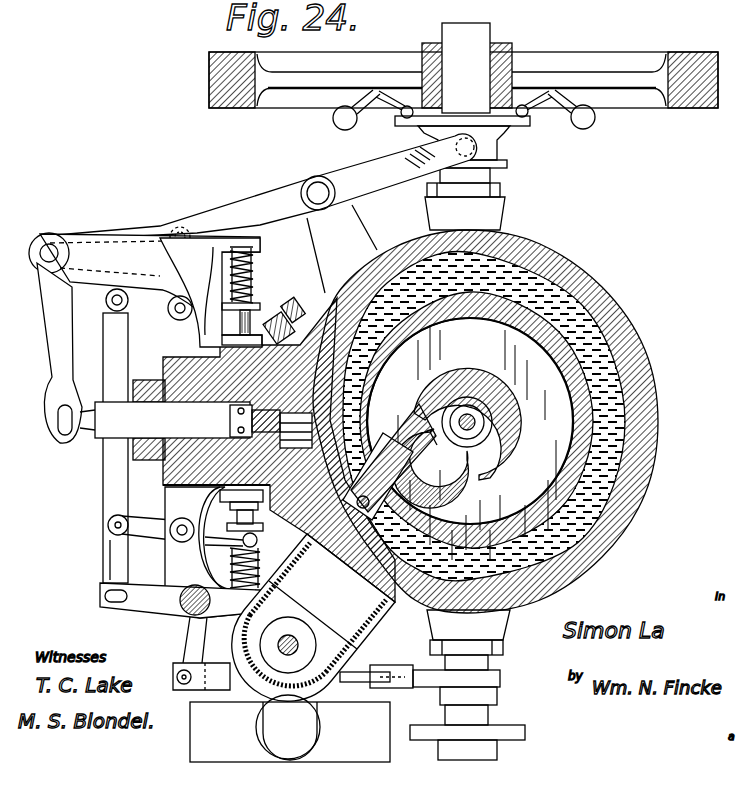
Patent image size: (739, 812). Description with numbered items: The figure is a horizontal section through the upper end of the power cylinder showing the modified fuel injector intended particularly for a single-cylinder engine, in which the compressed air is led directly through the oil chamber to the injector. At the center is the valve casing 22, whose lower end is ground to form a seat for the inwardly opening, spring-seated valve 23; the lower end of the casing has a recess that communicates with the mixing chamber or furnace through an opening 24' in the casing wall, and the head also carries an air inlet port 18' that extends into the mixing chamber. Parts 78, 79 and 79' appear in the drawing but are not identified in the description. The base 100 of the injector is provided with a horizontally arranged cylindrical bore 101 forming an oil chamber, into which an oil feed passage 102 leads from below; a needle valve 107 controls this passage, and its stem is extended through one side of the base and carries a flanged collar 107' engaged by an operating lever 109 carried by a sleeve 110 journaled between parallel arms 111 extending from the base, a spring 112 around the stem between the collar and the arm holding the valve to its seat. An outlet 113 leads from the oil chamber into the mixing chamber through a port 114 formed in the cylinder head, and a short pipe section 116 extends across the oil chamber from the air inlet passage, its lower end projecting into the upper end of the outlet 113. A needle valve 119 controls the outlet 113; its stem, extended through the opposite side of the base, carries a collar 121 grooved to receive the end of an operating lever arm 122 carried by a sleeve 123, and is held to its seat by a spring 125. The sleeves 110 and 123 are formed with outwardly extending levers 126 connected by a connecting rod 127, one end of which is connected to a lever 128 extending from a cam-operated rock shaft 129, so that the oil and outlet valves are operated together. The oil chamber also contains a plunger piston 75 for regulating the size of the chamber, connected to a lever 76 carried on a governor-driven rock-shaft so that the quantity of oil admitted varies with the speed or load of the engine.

The scroll casing outer wall 78 is at (588, 272).
The casing inner wall 79 is at (513, 415).
The valve casing 22 is at (498, 399).
The spring seated valve 23 is at (478, 427).
The opening 24' is at (419, 459).
The air inlet port 18' is at (389, 462).
The port 114 is at (348, 413).
The yoke 79' is at (313, 617).
The lever 76 is at (288, 727).
The plunger piston 75 is at (290, 732).
The levers 126 is at (147, 527).
The parallel arms 111 is at (150, 268).
The springs 112 is at (253, 266).
The operating levers 109 is at (239, 318).
The flanged collars 107' is at (276, 309).
The needle valve 107 is at (299, 308).
The sleeve 110 is at (116, 341).
The base 100 is at (172, 368).
The oil feed passage 102 is at (211, 296).
The short pipe section 116 is at (172, 420).
The outlet 113 is at (200, 418).
The cylindrical bore 101 is at (231, 420).
The needle valve 119 is at (216, 510).
The connecting rod 127 is at (110, 556).
The sleeve 123 is at (177, 542).
The operating lever arms 122 is at (212, 547).
The springs 125 is at (232, 570).
The collars 121 is at (245, 544).
The lever 128 is at (147, 600).
The rock shaft 129 is at (178, 610).